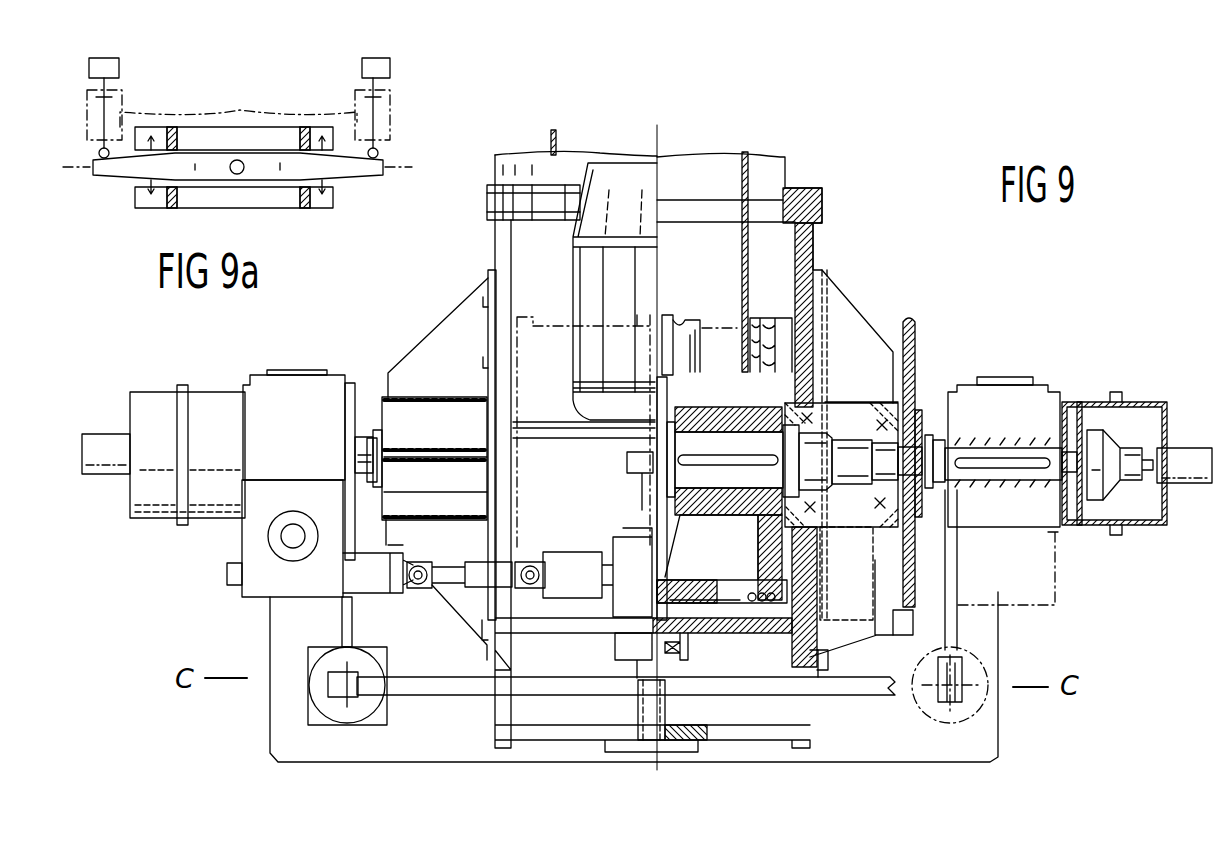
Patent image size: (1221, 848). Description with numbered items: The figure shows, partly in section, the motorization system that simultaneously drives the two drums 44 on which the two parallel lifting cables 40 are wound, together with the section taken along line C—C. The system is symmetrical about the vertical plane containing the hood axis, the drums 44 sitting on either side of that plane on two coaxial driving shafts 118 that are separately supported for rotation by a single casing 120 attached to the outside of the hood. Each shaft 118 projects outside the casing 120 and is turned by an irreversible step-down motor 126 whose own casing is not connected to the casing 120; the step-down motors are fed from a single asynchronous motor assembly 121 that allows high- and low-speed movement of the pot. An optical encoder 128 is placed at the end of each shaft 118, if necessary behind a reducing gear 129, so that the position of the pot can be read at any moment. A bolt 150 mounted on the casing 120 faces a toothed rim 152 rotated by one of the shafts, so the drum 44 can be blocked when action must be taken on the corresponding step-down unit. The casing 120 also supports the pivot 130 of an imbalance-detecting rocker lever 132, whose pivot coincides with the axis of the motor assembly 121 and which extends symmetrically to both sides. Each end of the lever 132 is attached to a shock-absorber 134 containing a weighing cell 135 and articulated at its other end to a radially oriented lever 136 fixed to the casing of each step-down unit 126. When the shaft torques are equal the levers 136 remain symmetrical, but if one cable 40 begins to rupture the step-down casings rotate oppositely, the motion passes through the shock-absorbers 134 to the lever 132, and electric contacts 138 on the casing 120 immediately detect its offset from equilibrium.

In FIG. 9, the cables 40 is at (556, 148).
In FIG. 9, the drums 44 is at (550, 322).
In FIG. 9, the driving shafts 118 is at (367, 430).
In FIG. 9, the casing 120 is at (418, 358).
In FIG. 9, the motor assembly 121 is at (590, 362).
In FIG. 9, the step-down motor 126 is at (253, 532).
In FIG. 9, the optical encoder 128 is at (108, 442).
In FIG. 9, the reducing gear 129 is at (1133, 430).
In FIG. 9a, the pivot 130 is at (230, 175).
In FIG. 9, the pivot 130 is at (645, 732).
In FIG. 9a, the lever 132 is at (272, 180).
In FIG. 9, the lever 132 is at (432, 690).
In FIG. 9a, the shock-absorber 134 is at (245, 113).
In FIG. 9, the shock-absorber 134 is at (310, 715).
In FIG. 9a, the weighing cell 135 is at (122, 93).
In FIG. 9a, the lever 136 is at (119, 66).
In FIG. 9, the lever 136 is at (342, 620).
In FIG. 9a, the electric contacts 138 is at (135, 200).
In FIG. 9, the bolt 150 is at (900, 640).
In FIG. 9, the toothed rim 152 is at (929, 338).